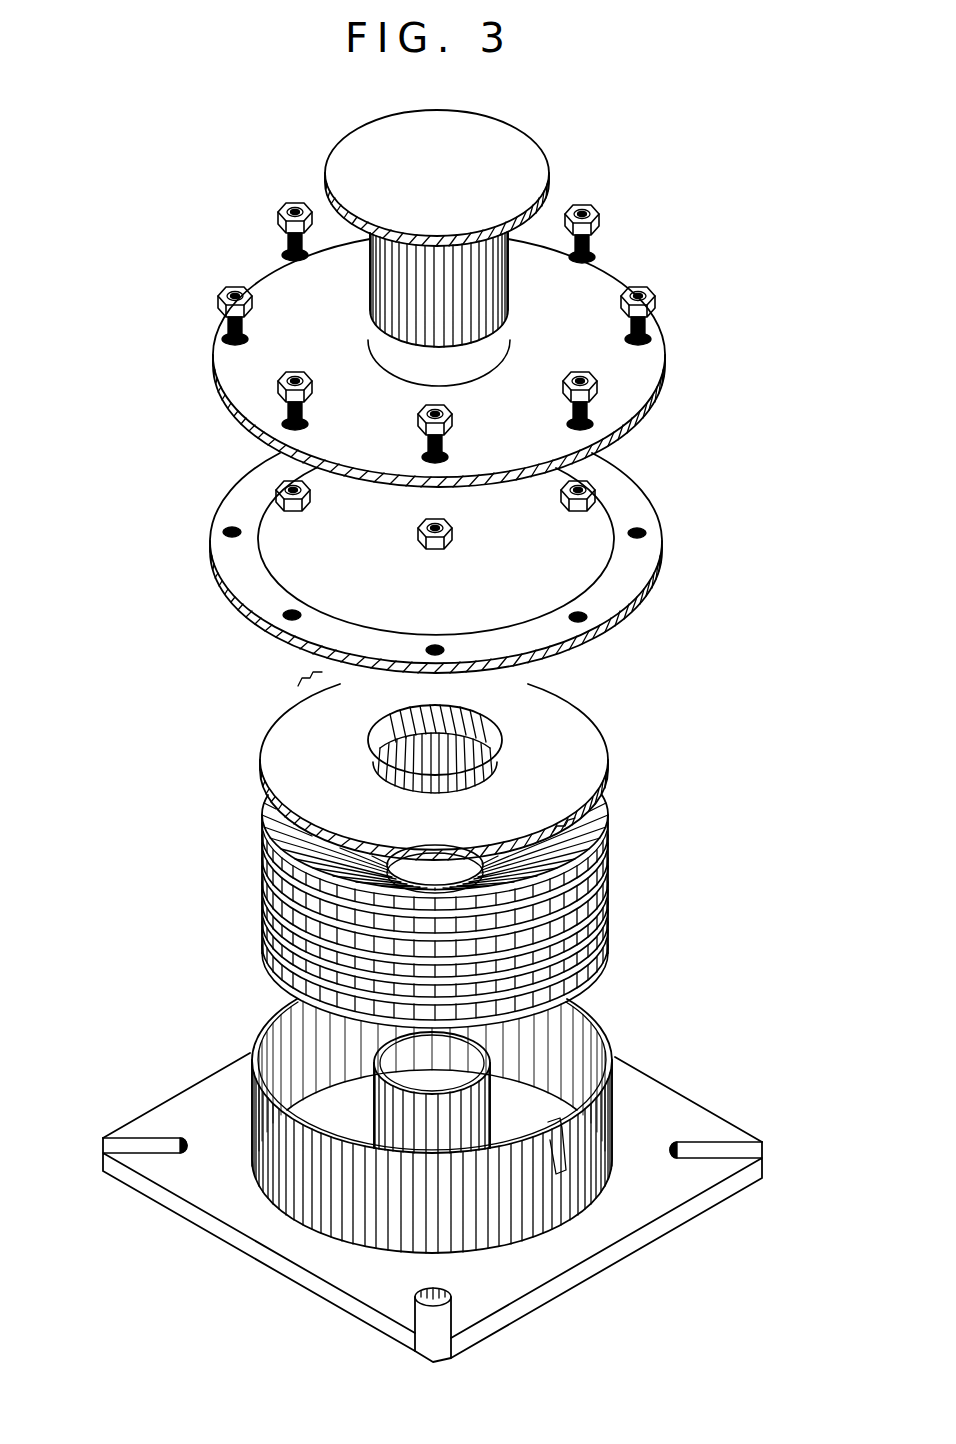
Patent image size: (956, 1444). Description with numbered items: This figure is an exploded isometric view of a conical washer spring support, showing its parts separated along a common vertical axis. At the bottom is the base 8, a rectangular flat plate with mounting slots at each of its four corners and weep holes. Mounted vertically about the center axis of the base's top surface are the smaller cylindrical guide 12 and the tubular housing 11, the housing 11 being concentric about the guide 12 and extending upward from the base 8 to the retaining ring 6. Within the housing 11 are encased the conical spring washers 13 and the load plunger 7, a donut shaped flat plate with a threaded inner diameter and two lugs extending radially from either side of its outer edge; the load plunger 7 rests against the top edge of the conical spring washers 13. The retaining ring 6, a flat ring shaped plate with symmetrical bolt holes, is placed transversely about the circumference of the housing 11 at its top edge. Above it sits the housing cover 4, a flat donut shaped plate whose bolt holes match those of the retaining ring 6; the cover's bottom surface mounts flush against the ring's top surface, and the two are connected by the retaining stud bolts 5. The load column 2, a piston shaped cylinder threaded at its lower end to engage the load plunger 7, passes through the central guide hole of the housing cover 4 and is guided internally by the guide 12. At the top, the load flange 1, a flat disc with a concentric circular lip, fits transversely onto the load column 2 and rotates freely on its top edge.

The load flange 1 is at (548, 162).
The load column 2 is at (213, 375).
The housing cover 4 is at (650, 393).
The retaining stud bolts 5 is at (280, 206).
The retaining ring 6 is at (214, 571).
The load plunger 7 is at (602, 727).
The base 8 is at (170, 1099).
The housing 11 is at (602, 1008).
The guide 12 is at (613, 1045).
The conical spring washers 13 is at (262, 833).